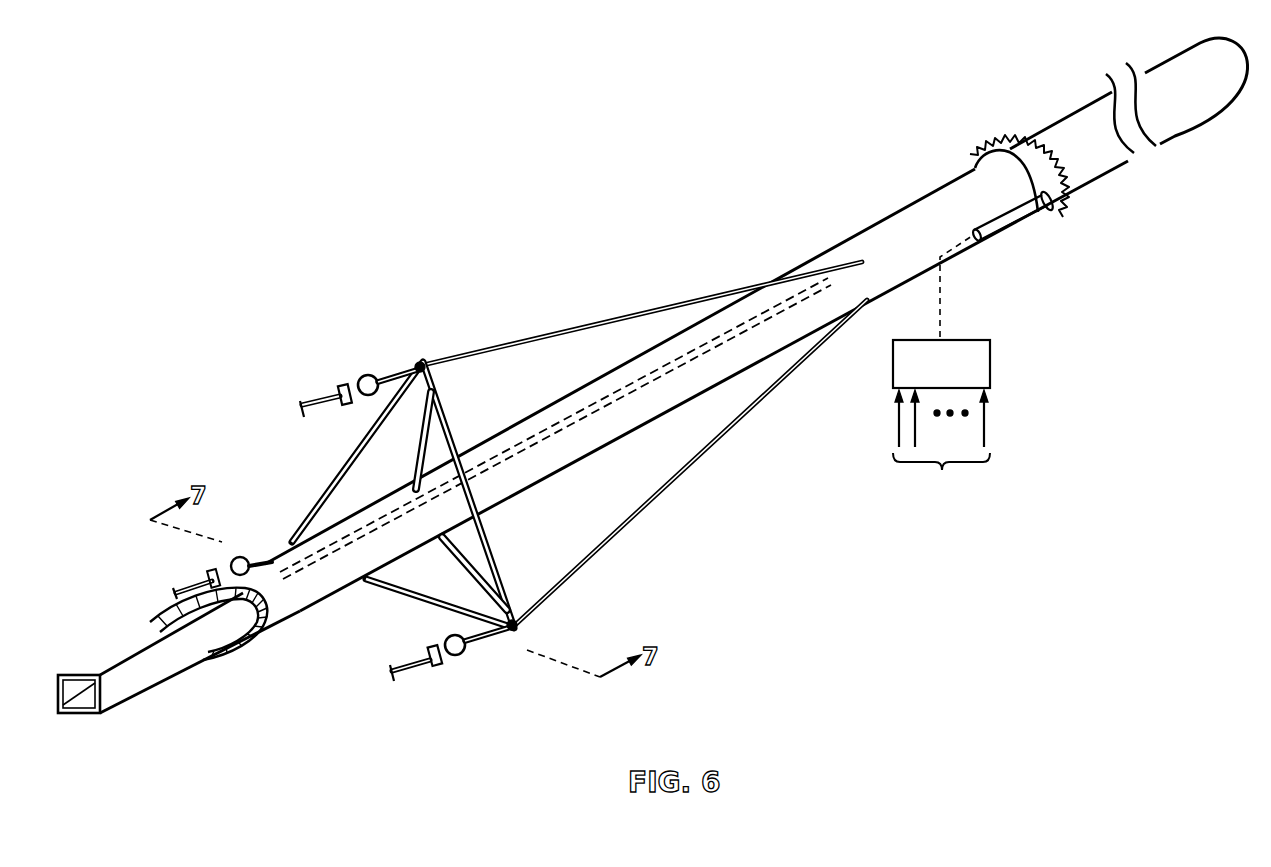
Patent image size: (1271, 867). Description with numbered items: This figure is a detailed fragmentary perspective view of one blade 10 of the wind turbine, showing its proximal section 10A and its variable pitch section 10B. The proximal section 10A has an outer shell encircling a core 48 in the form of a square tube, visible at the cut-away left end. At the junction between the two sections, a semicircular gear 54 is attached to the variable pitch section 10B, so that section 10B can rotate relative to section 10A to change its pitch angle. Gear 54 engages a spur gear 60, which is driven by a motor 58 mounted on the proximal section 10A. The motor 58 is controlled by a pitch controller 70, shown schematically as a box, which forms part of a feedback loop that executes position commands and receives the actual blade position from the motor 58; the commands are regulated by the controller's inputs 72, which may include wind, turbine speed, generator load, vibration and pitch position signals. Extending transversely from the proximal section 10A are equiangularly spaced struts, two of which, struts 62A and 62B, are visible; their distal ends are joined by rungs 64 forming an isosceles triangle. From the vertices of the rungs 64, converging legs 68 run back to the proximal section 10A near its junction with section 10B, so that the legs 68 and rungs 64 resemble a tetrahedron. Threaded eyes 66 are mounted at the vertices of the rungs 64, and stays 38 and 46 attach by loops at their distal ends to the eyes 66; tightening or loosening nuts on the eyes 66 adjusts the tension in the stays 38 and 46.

The blade 10 is at (756, 334).
The proximal section 10A is at (308, 593).
The variable pitch section 10B is at (1103, 168).
The stay 38 is at (320, 395).
The stay 46 is at (424, 670).
The core 48 is at (120, 645).
The semicircular gear 54 is at (990, 140).
The motor 58 is at (1013, 222).
The spur gear 60 is at (1052, 217).
The strut 62A is at (437, 424).
The strut 62B is at (471, 547).
The rungs 64 is at (350, 462).
The threaded eyes 66 is at (398, 371).
The converging legs 68 is at (533, 337).
The pitch controller 70 is at (990, 363).
The inputs 72 is at (941, 447).